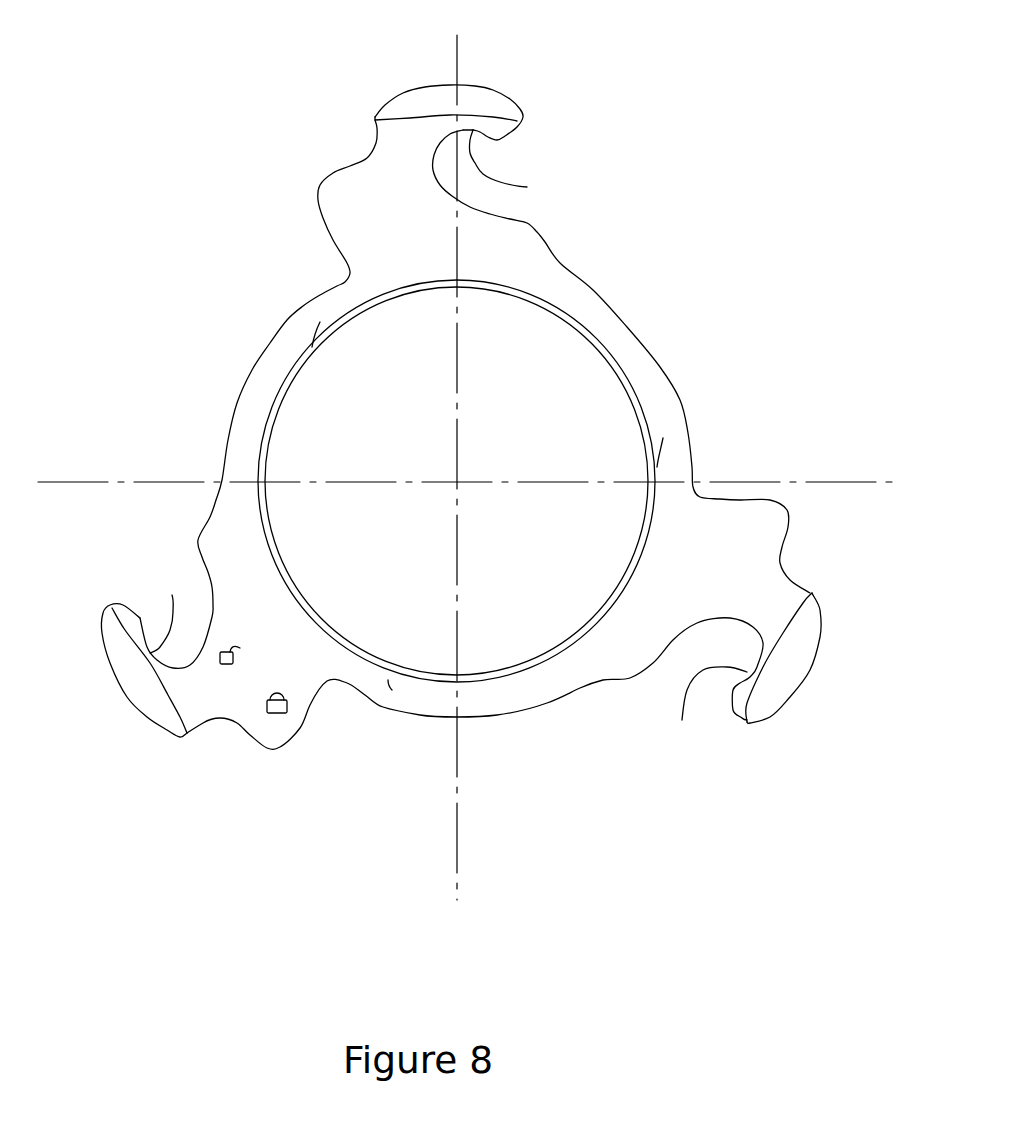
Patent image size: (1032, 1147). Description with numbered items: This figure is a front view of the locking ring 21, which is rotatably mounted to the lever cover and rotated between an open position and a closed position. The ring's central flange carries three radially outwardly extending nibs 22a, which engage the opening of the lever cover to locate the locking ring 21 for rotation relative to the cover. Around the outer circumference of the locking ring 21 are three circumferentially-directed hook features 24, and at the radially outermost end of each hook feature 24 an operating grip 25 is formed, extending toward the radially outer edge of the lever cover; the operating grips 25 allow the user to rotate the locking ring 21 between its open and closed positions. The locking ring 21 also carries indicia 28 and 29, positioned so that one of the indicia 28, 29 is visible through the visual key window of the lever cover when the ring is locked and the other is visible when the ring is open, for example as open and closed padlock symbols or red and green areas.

The locking ring 21 is at (621, 265).
The nibs 22a is at (320, 322).
The hook features 24 is at (527, 187).
The operating grip 25 is at (425, 107).
The indicia 28 is at (228, 664).
The indicia 29 is at (277, 713).